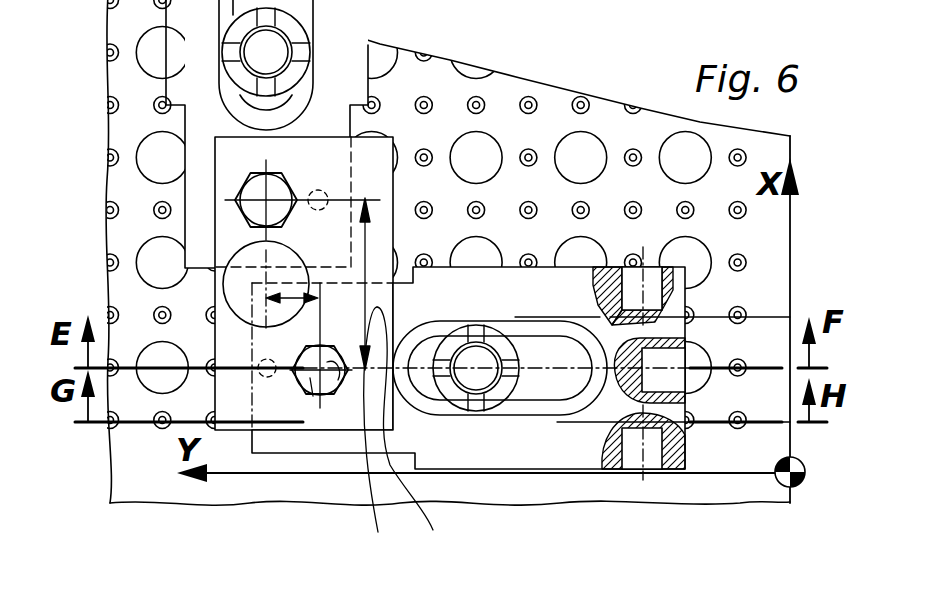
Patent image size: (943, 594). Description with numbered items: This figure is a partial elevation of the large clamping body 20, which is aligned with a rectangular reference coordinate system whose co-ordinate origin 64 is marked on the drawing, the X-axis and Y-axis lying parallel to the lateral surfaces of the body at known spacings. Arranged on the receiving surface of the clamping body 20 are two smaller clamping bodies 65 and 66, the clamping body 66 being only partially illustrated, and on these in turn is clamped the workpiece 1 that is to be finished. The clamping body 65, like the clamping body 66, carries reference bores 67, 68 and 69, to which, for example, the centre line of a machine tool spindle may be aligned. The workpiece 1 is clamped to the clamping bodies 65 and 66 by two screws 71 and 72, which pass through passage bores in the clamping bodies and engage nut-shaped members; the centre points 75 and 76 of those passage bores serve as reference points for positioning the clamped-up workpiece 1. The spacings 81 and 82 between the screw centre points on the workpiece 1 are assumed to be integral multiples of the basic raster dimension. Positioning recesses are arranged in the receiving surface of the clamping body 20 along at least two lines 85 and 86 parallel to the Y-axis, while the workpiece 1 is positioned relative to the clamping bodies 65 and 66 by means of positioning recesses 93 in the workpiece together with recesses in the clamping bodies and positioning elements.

The workpiece 1 is at (245, 160).
The clamping body 20 is at (805, 198).
The co-ordinate origin 64 is at (800, 462).
The clamping body 65 is at (505, 450).
The clamping body 66 is at (200, 60).
The reference bore 67 is at (677, 298).
The reference bore 68 is at (685, 375).
The reference bore 69 is at (630, 455).
The screw 71 is at (318, 400).
The screw 72 is at (253, 212).
The centre point 75 is at (340, 385).
The centre point 76 is at (240, 182).
The spacing 81 is at (375, 437).
The spacing 82 is at (413, 437).
The line 85 is at (770, 427).
The line 86 is at (763, 317).
The positioning recess 93 is at (262, 382).